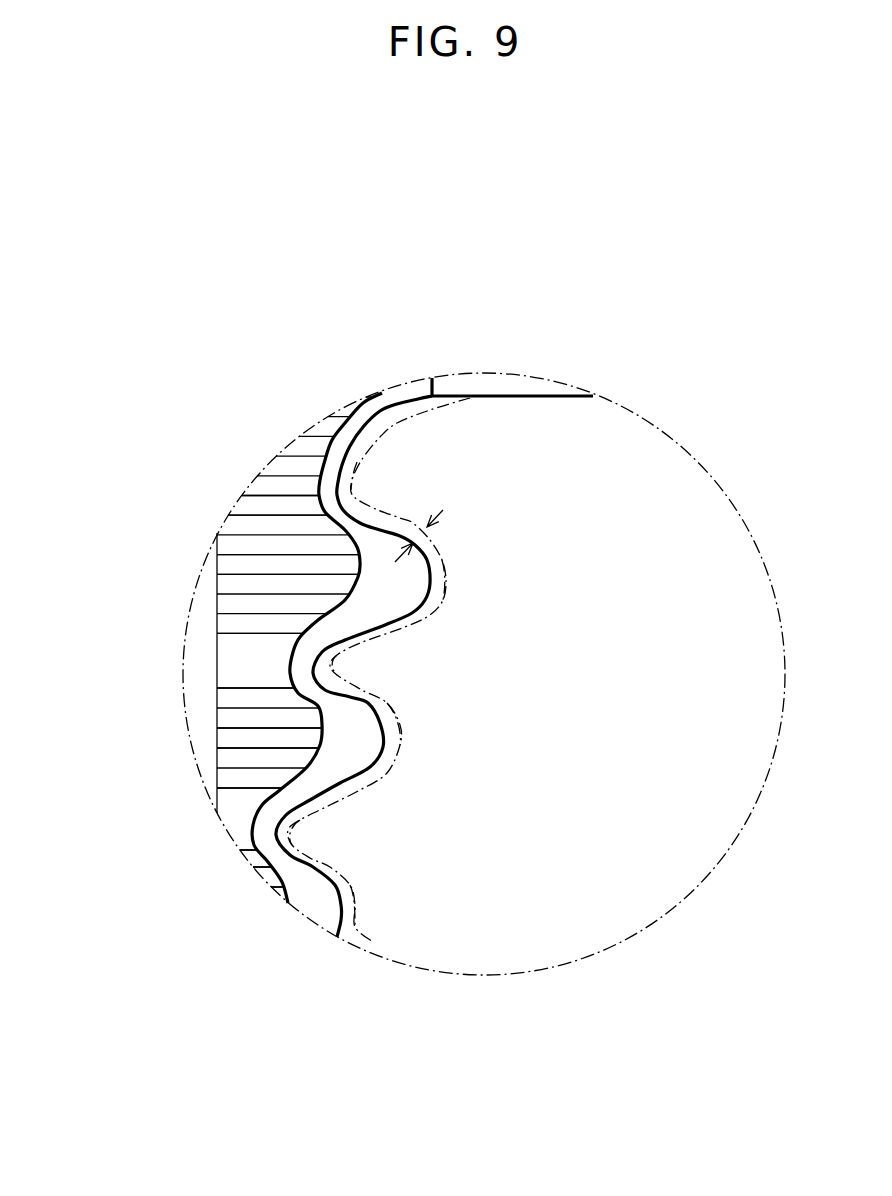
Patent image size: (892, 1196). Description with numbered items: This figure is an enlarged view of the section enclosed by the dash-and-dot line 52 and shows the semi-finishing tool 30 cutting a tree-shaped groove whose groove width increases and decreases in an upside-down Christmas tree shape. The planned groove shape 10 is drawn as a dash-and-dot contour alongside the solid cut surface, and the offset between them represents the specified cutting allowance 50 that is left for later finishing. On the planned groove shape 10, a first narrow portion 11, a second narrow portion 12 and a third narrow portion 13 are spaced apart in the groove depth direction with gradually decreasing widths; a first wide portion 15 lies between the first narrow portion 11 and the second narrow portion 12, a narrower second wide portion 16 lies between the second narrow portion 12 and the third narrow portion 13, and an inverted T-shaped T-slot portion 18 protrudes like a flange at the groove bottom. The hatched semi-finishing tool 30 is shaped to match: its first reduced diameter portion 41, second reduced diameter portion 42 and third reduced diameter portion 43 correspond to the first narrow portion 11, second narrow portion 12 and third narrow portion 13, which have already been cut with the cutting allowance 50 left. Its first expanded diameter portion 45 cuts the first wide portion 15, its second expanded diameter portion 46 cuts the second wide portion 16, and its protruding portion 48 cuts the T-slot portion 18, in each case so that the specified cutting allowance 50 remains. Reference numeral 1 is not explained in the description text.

The heat exchanger tube 1 is at (485, 396).
The planned groove shape 10 is at (373, 942).
The first narrow portion 11 is at (355, 472).
The second narrow portion 12 is at (333, 663).
The third narrow portion 13 is at (290, 822).
The first wide portion 15 is at (450, 577).
The second wide portion 16 is at (403, 737).
The T-slot portion 18 is at (360, 904).
The semi-finishing tool 30 is at (322, 348).
The first reduced diameter portion 41 is at (225, 473).
The second reduced diameter portion 42 is at (158, 660).
The third reduced diameter portion 43 is at (192, 818).
The first expanded diameter portion 45 is at (178, 573).
The second expanded diameter portion 46 is at (158, 738).
The protruding portion 48 is at (240, 884).
The specified cutting allowance 50 is at (432, 548).
The dash-and-dot line 52 is at (682, 450).